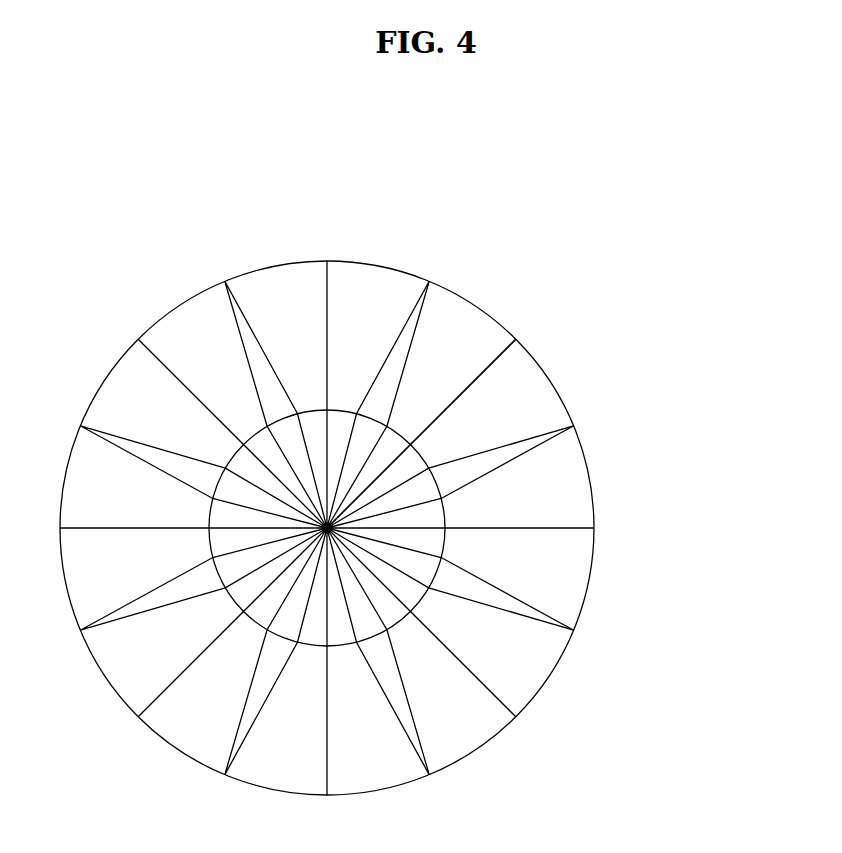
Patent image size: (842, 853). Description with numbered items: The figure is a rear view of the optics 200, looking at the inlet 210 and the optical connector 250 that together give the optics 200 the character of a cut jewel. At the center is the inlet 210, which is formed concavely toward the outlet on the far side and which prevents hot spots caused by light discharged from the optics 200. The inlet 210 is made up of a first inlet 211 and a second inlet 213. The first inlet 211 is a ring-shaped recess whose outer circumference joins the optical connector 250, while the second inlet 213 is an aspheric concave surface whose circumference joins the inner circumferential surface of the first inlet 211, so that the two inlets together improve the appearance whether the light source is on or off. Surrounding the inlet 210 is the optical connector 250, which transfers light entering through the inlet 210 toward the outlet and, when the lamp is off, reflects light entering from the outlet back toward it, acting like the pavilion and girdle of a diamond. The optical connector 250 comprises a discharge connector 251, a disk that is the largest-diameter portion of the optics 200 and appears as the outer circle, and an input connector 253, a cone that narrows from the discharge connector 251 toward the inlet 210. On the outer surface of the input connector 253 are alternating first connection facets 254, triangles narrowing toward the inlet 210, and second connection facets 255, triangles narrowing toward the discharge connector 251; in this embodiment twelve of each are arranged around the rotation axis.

The optics 200 is at (673, 110).
The inlet 210 is at (277, 157).
The first inlet 211 is at (390, 450).
The second inlet 213 is at (320, 495).
The optical connector 250 is at (628, 480).
The discharge connector 251 is at (592, 583).
The input connector 253 is at (586, 246).
The first connection facet 254 is at (523, 393).
The second connection facet 255 is at (517, 450).